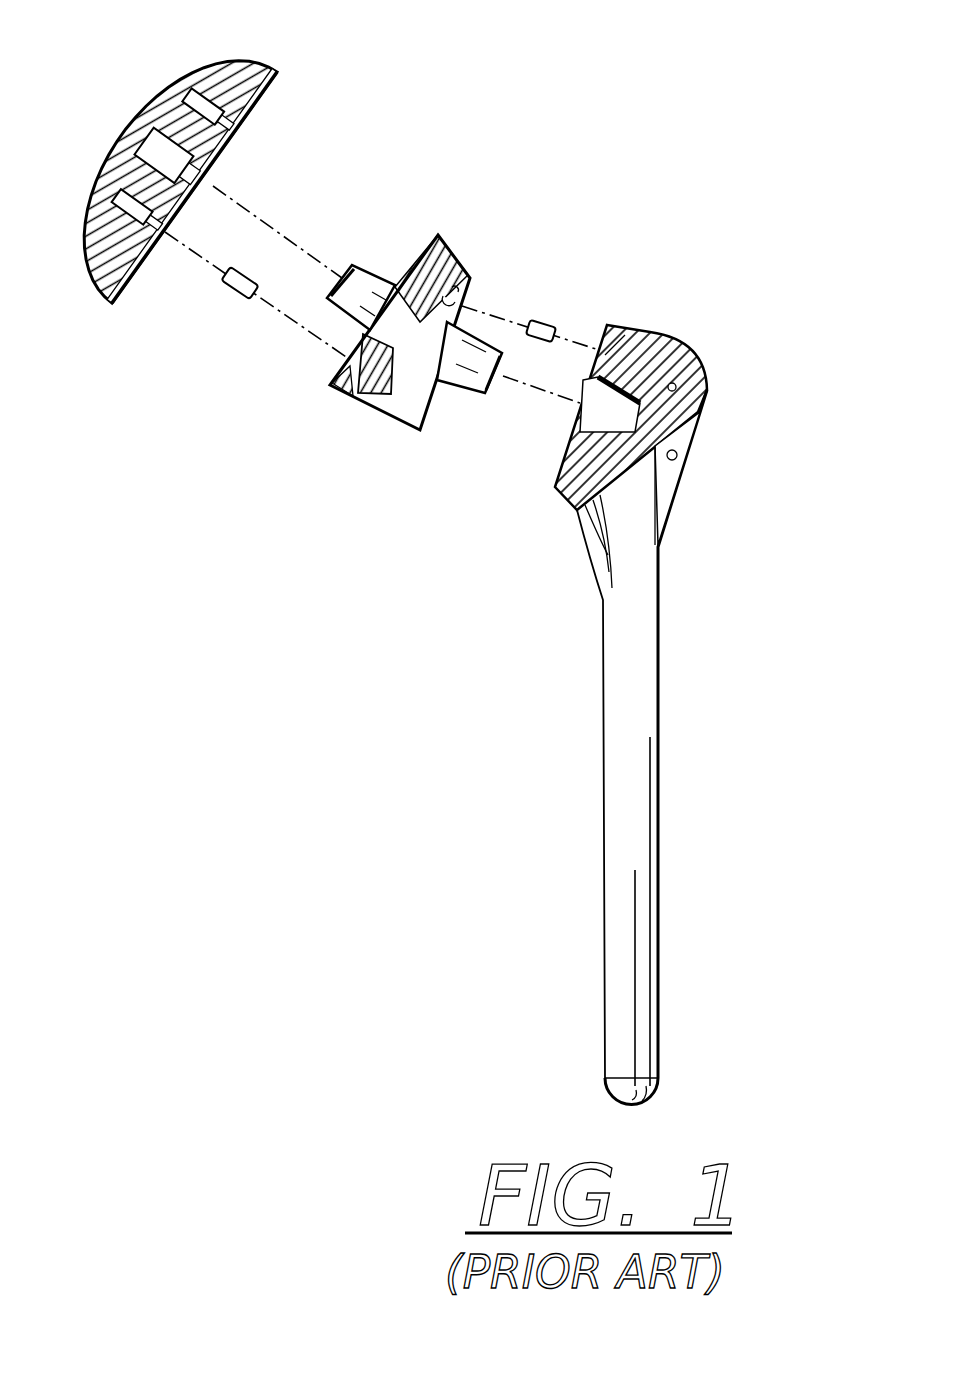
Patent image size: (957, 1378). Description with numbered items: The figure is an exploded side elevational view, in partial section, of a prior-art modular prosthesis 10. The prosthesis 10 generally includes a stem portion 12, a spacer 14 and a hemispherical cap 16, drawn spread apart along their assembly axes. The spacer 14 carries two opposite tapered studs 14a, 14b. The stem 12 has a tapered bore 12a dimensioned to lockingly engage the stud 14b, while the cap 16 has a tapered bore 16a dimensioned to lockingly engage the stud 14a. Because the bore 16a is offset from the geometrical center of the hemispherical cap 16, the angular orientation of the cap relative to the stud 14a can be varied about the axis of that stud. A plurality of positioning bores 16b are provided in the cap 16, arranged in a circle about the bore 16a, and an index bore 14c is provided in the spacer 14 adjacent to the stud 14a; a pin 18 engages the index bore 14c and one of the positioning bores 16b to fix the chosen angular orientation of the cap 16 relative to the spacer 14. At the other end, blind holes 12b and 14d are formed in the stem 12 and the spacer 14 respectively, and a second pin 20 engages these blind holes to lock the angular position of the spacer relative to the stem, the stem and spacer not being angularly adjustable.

The prosthesis 10 is at (180, 504).
The stem portion 12 is at (660, 688).
The tapered bore 12a is at (637, 403).
The blind hole 12b is at (617, 360).
The spacer 14 is at (457, 263).
The tapered stud 14a is at (371, 268).
The tapered stud 14b is at (470, 398).
The index bore 14c is at (348, 395).
The blind hole 14d is at (470, 278).
The hemispherical cap 16 is at (157, 97).
The tapered bore 16a is at (165, 146).
The positioning bores 16b is at (250, 103).
The pin 18 is at (242, 300).
The second pin 20 is at (541, 320).